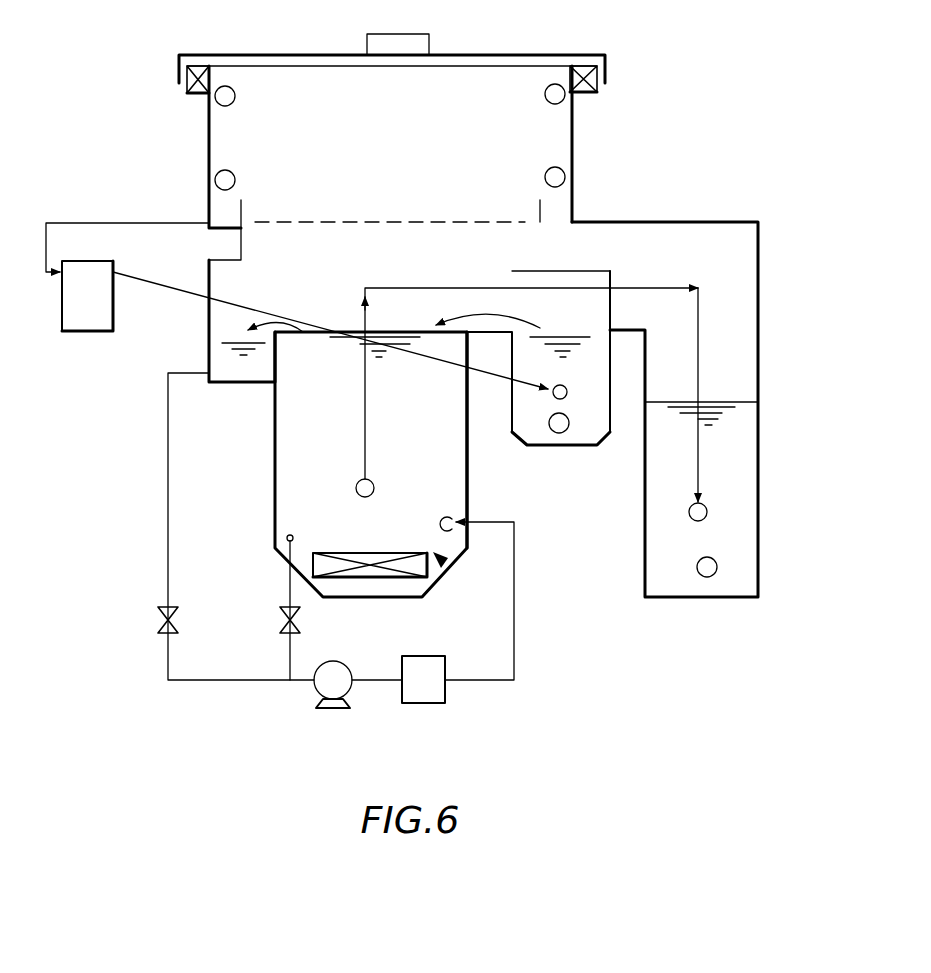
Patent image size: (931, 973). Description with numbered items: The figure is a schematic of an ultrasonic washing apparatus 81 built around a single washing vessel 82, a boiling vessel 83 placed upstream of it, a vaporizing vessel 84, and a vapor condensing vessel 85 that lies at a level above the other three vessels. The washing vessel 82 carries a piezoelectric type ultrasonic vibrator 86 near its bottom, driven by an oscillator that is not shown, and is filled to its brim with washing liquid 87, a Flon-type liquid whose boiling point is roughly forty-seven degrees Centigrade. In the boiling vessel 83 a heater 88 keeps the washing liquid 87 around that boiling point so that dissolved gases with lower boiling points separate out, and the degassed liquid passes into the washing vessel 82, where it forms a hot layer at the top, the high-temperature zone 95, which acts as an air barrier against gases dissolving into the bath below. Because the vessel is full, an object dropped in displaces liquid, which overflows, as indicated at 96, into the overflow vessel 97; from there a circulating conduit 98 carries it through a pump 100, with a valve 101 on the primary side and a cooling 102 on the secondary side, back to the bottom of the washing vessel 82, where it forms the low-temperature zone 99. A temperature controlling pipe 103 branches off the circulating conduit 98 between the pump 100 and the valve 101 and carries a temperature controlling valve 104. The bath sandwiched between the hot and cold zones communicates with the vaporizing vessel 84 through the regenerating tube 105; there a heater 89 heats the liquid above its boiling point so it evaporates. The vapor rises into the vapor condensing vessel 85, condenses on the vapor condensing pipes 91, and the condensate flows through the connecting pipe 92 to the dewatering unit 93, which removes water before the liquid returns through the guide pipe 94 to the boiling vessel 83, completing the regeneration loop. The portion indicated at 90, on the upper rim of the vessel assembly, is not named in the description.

The ultrasonic washing apparatus 81 is at (662, 98).
The washing vessel 82 is at (275, 470).
The boiling vessel 83 is at (583, 445).
The vaporizing vessel 84 is at (645, 535).
The vapor condensing vessel 85 is at (574, 190).
The piezoelectric type ultrasonic vibrator 86 is at (380, 553).
The washing liquid 87 is at (218, 362).
The heater 88 is at (557, 433).
The heater 89 is at (705, 578).
The tank 90 is at (580, 240).
The vapor condensing pipes 91 is at (235, 102).
The connecting pipe 92 is at (122, 222).
The dewatering unit 93 is at (85, 333).
The guide pipe 94 is at (147, 277).
The high-temperature zone 95 is at (467, 350).
The overflow 96 is at (262, 386).
The overflow vessel 97 is at (210, 388).
The circulating conduit 98 is at (166, 525).
The low-temperature zone 99 is at (447, 563).
The pump 100 is at (315, 700).
The valve 101 is at (158, 622).
The cooling 102 is at (447, 695).
The temperature controlling pipe 103 is at (287, 590).
The temperature controlling valve 104 is at (283, 625).
The regenerating tube 105 is at (368, 442).